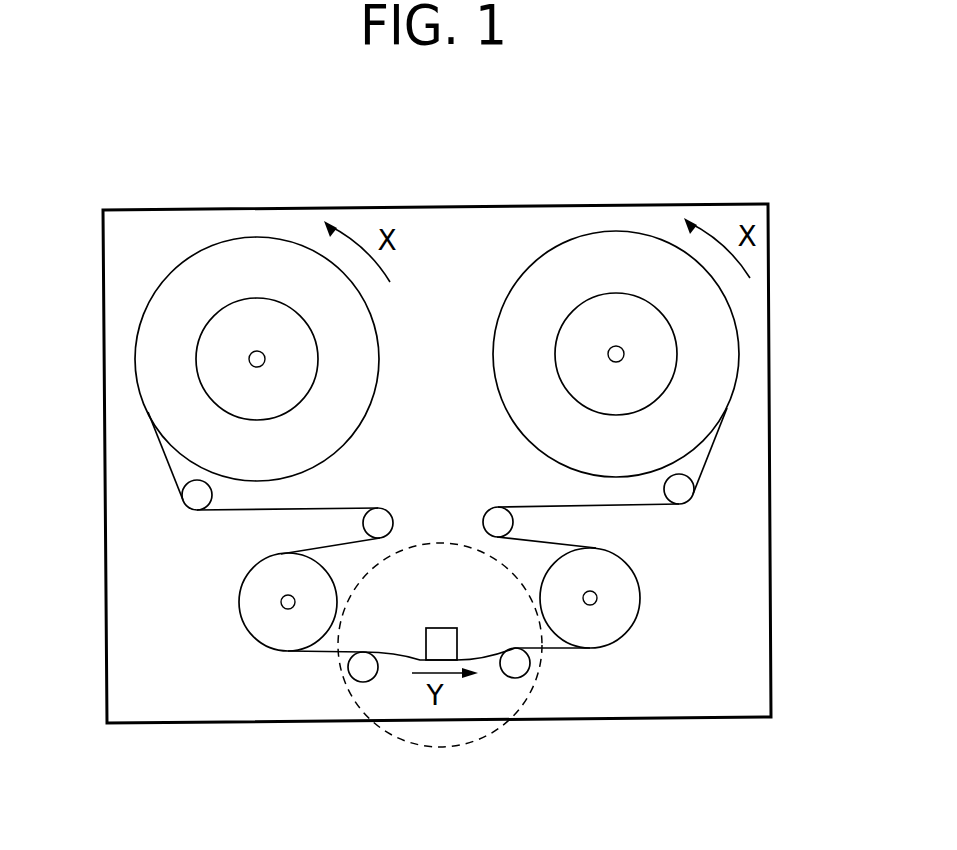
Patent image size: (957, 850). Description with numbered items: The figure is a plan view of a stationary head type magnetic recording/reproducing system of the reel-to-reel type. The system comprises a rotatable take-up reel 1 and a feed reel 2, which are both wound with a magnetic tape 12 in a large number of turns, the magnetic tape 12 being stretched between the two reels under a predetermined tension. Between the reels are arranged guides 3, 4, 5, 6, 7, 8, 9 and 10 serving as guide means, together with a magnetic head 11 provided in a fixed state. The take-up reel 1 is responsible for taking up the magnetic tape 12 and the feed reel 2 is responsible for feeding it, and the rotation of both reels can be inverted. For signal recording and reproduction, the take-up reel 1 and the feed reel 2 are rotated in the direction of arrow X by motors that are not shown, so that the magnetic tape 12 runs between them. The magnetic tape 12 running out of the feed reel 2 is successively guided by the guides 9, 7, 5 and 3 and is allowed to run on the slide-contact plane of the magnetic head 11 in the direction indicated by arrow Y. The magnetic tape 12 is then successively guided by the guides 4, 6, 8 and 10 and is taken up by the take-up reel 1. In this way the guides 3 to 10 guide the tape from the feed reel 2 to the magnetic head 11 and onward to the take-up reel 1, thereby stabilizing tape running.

The take-up reel 1 is at (653, 355).
The feed reel 2 is at (217, 347).
The guide 3 is at (363, 662).
The guide 4 is at (517, 667).
The guide 5 is at (272, 637).
The guide 6 is at (597, 627).
The guide 7 is at (380, 522).
The guide 8 is at (497, 522).
The guide 9 is at (193, 497).
The guide 10 is at (680, 493).
The magnetic head 11 is at (438, 643).
The magnetic tape 12 is at (712, 453).